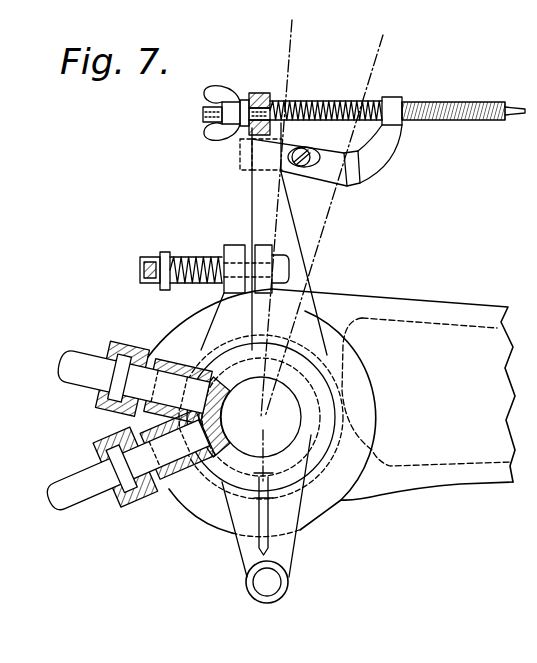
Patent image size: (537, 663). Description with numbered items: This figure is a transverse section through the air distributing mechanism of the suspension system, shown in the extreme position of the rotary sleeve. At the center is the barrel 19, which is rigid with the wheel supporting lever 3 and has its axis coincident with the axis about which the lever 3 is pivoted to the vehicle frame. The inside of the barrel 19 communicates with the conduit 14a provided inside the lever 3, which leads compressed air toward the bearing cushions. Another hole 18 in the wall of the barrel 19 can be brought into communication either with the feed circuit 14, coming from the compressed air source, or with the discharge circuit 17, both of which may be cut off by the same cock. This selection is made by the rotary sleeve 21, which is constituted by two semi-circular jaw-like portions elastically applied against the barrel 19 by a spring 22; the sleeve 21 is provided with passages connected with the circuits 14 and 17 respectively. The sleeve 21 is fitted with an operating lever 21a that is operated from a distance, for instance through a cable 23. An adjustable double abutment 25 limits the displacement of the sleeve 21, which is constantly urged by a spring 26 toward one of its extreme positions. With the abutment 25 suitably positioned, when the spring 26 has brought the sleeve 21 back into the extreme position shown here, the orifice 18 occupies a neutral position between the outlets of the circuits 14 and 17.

The lever 3 is at (440, 470).
The feed circuit 14 is at (80, 483).
The conduit 14a is at (410, 350).
The discharge circuit 17 is at (93, 362).
The hole 18 is at (205, 458).
The barrel 19 is at (283, 453).
The rotary sleeve 21 is at (330, 432).
The operating lever 21a is at (283, 243).
The spring 22 is at (192, 262).
The cable 23 is at (332, 104).
The adjustable double abutment 25 is at (245, 160).
The spring 26 is at (286, 103).